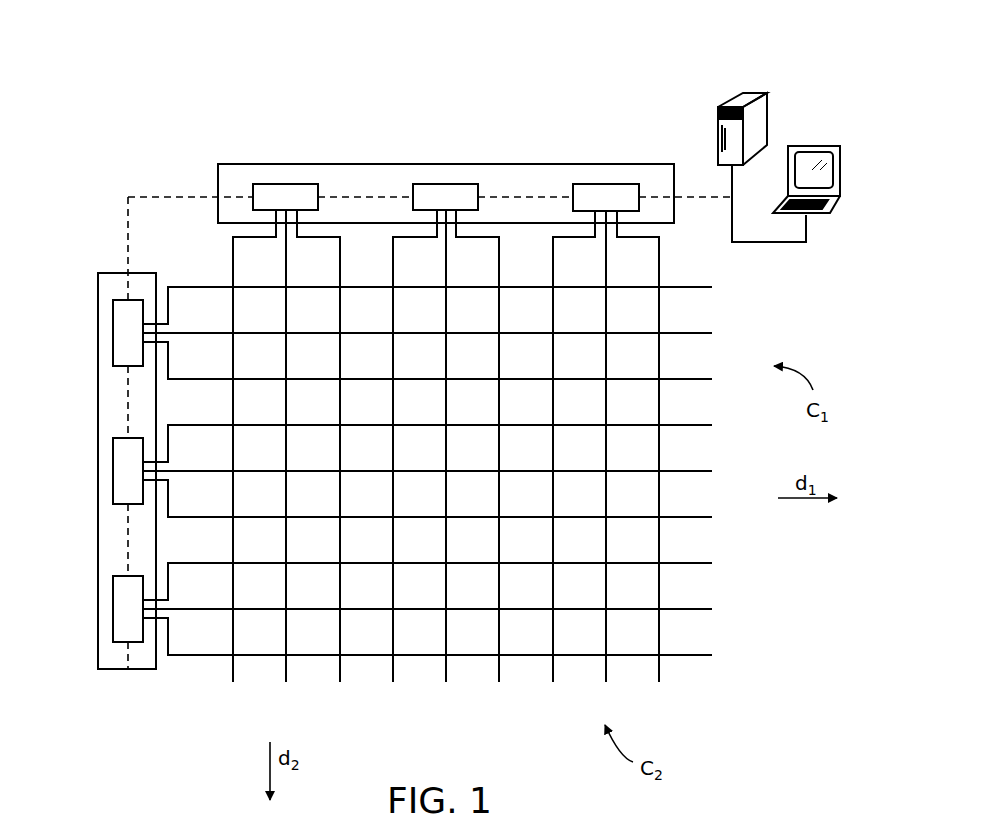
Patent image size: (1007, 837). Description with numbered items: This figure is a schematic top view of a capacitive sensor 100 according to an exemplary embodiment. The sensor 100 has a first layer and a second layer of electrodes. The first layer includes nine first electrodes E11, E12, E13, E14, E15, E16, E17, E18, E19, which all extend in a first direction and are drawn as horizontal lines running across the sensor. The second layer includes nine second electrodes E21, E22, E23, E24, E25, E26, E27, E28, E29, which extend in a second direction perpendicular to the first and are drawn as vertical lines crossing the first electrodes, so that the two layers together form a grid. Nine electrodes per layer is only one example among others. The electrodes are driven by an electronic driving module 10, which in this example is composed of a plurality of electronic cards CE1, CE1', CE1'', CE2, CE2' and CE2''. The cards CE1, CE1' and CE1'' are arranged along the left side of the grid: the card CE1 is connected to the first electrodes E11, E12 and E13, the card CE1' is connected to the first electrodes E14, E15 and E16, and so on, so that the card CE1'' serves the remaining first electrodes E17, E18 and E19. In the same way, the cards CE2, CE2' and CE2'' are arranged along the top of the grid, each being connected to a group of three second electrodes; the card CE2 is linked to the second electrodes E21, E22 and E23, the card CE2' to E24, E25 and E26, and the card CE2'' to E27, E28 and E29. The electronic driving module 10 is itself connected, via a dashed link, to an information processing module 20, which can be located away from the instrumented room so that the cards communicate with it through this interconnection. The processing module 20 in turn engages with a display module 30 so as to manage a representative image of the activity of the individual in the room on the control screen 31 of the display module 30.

The capacitive sensor 100 is at (133, 120).
The electronic driving module 10 is at (248, 165).
The information processing module 20 is at (782, 92).
The display module 30 is at (794, 136).
The control screen 31 is at (808, 165).
The electronic card CE1 is at (95, 309).
The electronic card CE1' is at (92, 448).
The electronic card CE1'' is at (92, 586).
The electronic card CE2 is at (286, 156).
The electronic card CE2' is at (448, 156).
The electronic card CE2'' is at (611, 156).
The first electrode E11 is at (447, 299).
The first electrode E12 is at (447, 333).
The first electrode E13 is at (447, 367).
The first electrode E14 is at (448, 437).
The first electrode E15 is at (447, 471).
The first electrode E16 is at (448, 505).
The first electrode E17 is at (447, 575).
The first electrode E18 is at (447, 609).
The first electrode E19 is at (447, 643).
The second electrode E21 is at (246, 463).
The second electrode E22 is at (285, 463).
The second electrode E23 is at (325, 463).
The second electrode E24 is at (407, 463).
The second electrode E25 is at (445, 463).
The second electrode E26 is at (485, 463).
The second electrode E27 is at (566, 463).
The second electrode E28 is at (605, 463).
The second electrode E29 is at (645, 463).